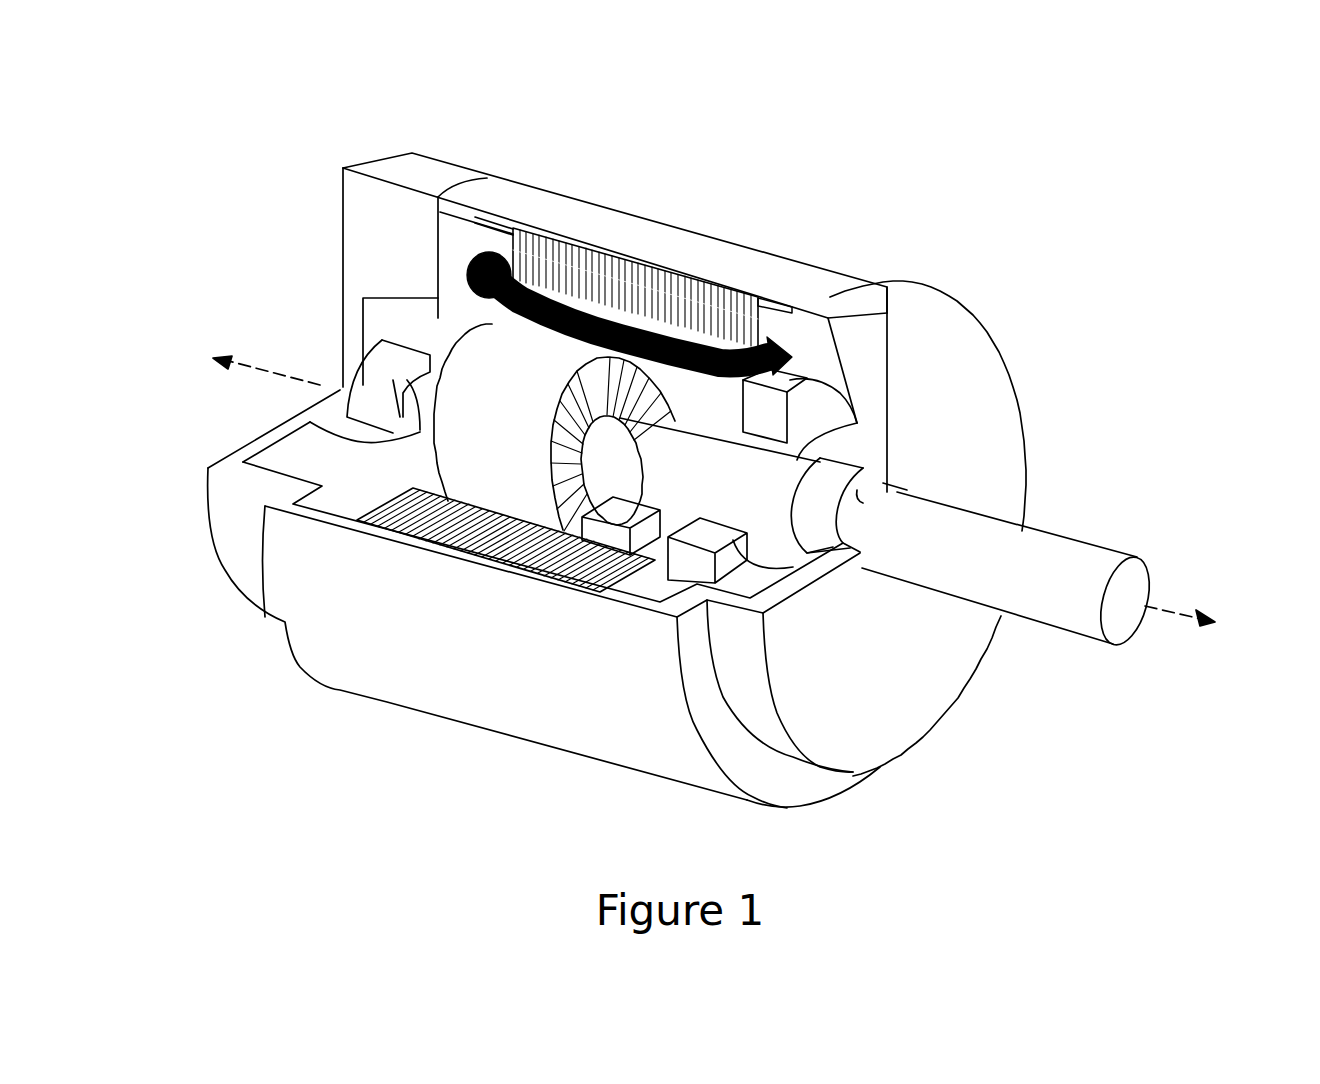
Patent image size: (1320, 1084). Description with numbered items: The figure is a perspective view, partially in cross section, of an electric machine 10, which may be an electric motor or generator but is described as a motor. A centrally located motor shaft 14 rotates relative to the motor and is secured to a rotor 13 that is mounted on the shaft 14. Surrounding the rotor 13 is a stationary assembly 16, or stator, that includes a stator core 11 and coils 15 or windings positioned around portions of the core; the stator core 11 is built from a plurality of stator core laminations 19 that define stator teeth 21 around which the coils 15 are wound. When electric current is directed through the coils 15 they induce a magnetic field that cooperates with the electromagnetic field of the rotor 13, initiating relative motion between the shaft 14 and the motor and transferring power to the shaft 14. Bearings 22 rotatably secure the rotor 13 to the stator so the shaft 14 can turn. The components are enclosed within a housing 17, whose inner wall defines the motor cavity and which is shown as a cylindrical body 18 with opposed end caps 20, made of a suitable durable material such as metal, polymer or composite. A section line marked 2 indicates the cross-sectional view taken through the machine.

The electric machine 10 is at (963, 205).
The stator core 11 is at (640, 260).
The rotor 13 is at (489, 466).
The motor shaft 14 is at (1098, 545).
The coils 15 is at (607, 307).
The stationary assembly 16 is at (586, 304).
The housing 17 is at (685, 785).
The cylindrical body 18 is at (920, 293).
The stator core laminations 19 is at (610, 568).
The end caps 20 is at (367, 157).
The stator teeth 21 is at (760, 328).
The bearings 22 is at (380, 353).
The section line 2- 2 is at (887, 272).